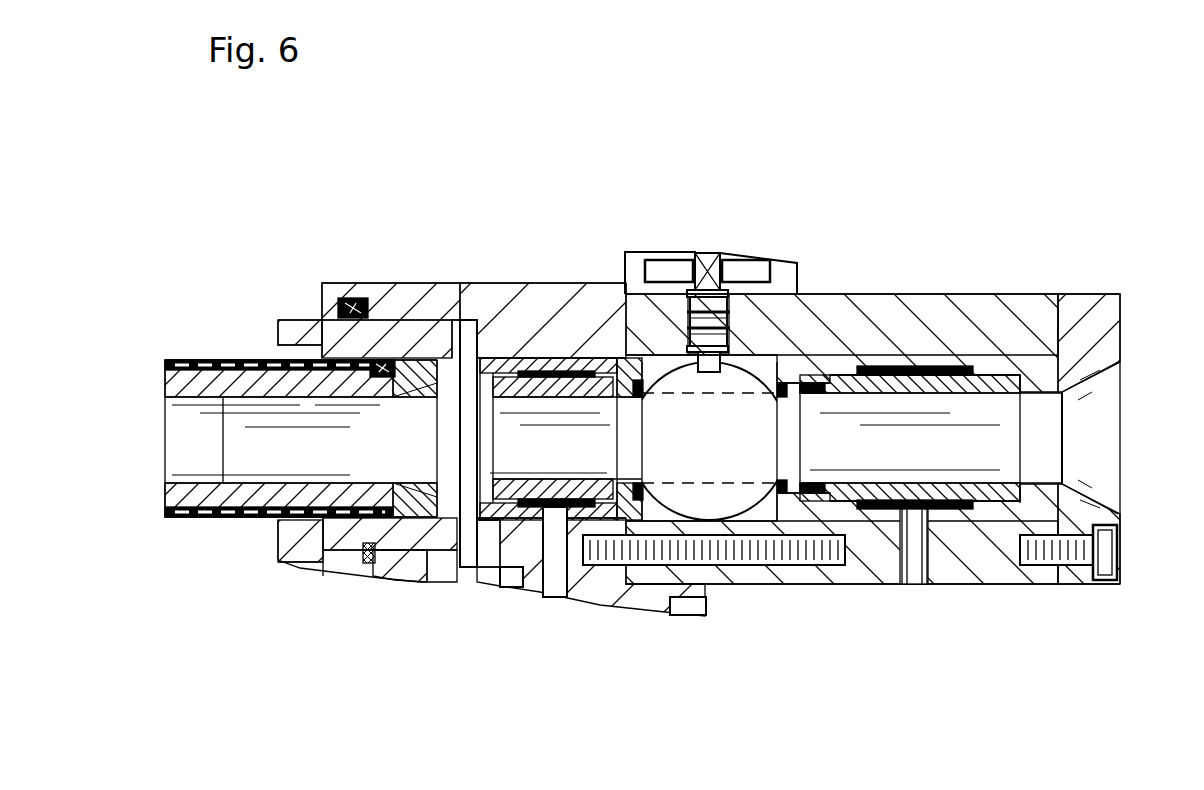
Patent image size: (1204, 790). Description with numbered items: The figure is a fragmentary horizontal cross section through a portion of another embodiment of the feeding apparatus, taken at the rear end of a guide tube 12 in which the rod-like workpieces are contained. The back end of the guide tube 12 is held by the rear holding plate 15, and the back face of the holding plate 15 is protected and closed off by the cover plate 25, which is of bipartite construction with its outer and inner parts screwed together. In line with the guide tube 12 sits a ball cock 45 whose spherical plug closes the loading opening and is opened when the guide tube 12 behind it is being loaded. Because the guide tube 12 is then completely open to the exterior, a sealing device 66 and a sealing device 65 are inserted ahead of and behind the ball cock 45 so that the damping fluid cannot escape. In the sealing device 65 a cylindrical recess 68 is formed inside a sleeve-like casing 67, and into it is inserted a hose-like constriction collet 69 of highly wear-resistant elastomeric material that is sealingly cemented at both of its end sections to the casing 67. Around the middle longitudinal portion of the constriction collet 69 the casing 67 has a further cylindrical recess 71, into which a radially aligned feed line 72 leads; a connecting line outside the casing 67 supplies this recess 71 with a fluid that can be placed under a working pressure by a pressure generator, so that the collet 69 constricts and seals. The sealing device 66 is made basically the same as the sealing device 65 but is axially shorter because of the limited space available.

The guide tube 12 is at (182, 360).
The rear holding plate 15 is at (377, 310).
The cover plate 25 is at (434, 280).
The sealing device 66 is at (553, 306).
The sealing device 65 is at (914, 318).
The constriction collet 69 is at (840, 384).
The sleeve-like casing 67 is at (1010, 366).
The cylindrical recess 68 is at (1017, 413).
The cylindrical recess 71 is at (957, 509).
The feed line 72 is at (913, 586).
The ball cock 45 is at (733, 590).